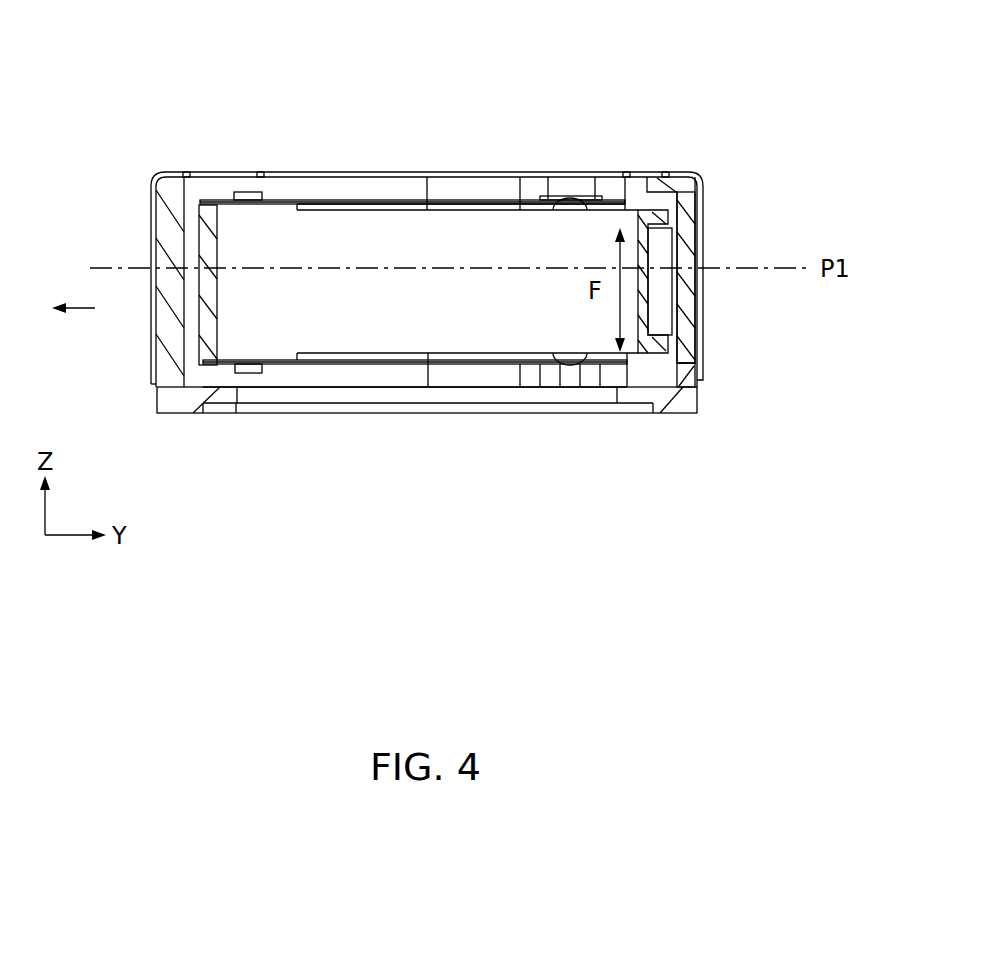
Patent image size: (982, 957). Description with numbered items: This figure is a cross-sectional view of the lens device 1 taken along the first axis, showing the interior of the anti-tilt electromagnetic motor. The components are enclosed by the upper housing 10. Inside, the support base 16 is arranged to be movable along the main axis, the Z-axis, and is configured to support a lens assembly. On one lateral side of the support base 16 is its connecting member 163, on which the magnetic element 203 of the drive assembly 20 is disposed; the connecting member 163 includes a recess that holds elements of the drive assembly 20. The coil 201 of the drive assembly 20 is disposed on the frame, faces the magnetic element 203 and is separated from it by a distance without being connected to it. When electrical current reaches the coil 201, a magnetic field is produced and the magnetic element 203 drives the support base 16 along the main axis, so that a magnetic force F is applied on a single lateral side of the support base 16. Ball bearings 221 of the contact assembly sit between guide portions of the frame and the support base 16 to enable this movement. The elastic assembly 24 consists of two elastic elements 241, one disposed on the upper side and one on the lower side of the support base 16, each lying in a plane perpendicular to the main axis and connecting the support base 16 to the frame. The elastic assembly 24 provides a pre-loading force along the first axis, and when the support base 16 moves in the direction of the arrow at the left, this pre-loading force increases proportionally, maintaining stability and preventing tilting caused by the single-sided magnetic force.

The lens device 1 is at (118, 70).
The upper housing 10 is at (680, 176).
The support base 16 is at (211, 208).
The connecting member 163 is at (655, 220).
The drive assembly 20 is at (708, 217).
The coil 201 is at (687, 246).
The magnetic element 203 is at (660, 290).
The elastic assembly 24 is at (350, 185).
The elastic element 241 is at (478, 198).
The ball bearing 221 is at (573, 196).